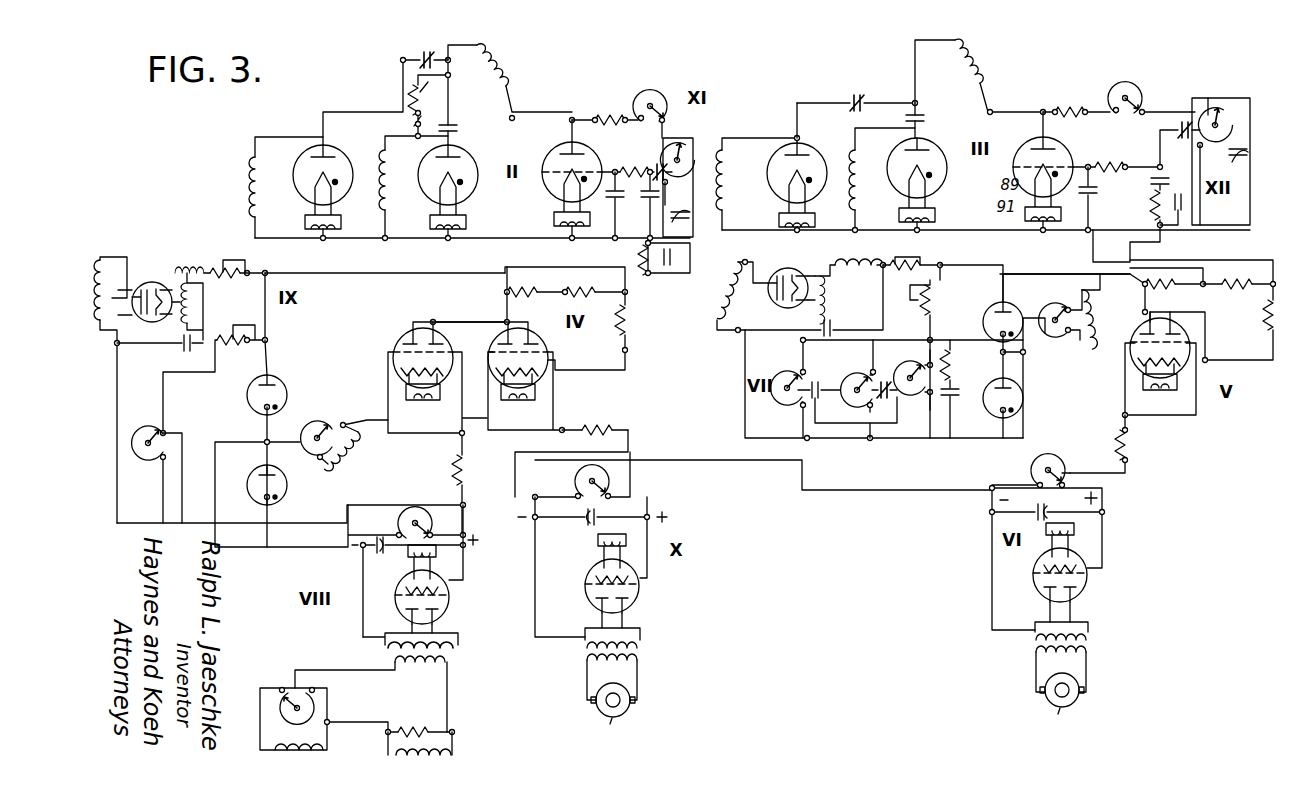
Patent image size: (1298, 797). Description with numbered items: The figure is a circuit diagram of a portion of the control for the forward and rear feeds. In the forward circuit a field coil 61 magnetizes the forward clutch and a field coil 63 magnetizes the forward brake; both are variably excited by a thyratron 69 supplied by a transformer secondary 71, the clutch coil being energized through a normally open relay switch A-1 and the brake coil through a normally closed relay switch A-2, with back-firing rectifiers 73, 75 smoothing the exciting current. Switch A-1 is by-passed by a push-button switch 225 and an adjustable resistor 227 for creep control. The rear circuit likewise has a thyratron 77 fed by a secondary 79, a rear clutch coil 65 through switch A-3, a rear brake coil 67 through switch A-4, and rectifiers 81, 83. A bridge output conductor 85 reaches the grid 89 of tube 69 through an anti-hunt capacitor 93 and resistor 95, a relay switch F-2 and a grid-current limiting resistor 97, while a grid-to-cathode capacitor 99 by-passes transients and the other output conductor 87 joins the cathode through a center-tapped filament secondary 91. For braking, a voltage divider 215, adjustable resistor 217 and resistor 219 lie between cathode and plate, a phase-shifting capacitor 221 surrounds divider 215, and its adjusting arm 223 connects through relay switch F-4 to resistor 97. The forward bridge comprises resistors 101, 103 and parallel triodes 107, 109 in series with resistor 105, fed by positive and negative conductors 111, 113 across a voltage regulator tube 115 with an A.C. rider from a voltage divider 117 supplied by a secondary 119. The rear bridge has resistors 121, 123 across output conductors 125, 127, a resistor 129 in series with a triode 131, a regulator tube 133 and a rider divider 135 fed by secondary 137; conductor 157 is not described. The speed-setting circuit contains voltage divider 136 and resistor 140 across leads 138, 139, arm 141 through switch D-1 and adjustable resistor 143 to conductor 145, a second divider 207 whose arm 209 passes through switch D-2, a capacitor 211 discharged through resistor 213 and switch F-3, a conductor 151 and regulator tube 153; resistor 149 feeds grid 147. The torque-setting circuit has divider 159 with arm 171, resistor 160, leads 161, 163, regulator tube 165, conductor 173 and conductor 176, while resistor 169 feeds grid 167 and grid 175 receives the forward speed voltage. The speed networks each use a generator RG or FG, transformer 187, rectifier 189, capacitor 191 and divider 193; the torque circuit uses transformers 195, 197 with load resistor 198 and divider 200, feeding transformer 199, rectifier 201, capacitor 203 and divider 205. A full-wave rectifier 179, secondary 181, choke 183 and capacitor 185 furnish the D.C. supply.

The field coil 63 is at (248, 172).
The back-firing rectifier 75 is at (300, 201).
The field coil 61 is at (390, 190).
The back-firing rectifier 73 is at (470, 196).
The normally open relay switch A-1 is at (452, 123).
The normally closed relay switch A-2 is at (420, 56).
The adjustable resistor 227 is at (410, 86).
The push-button switch 225 is at (412, 124).
The transformer secondary 71 is at (510, 84).
The thyratron 69 is at (541, 154).
The grid 89 is at (556, 176).
The center-tapped filament transformer secondary 91 is at (557, 226).
The resistor 219 is at (612, 116).
The adjustable resistor 217 is at (650, 98).
The grid-current limiting resistor 97 is at (616, 165).
The normally closed relay switch F-4 is at (657, 165).
The grid-to-cathode capacitor 99 is at (610, 200).
The normally open relay switch F-2 is at (645, 200).
The adjusting arm 223 is at (683, 150).
The voltage divider 215 is at (679, 193).
The phase-shifting capacitor 221 is at (676, 223).
The capacitor 93 is at (676, 257).
The resistor 95 is at (655, 258).
The field coil 67 is at (728, 195).
The back-firing rectifier 83 is at (771, 161).
The normally closed relay switch A-4 is at (858, 96).
The normally open relay switch A-3 is at (924, 114).
The field coil 65 is at (860, 190).
The back-firing rectifier 81 is at (950, 181).
The transformer secondary 79 is at (982, 72).
The thyratron tube 77 is at (1021, 144).
The transformer secondary 181 is at (102, 256).
The full-wave rectifier 179 is at (160, 282).
The series choke 183 is at (186, 266).
The parallel capacitor 185 is at (183, 349).
The positive lead 161 is at (262, 272).
The positive conductor 111 is at (362, 273).
The resistor 160 is at (237, 330).
The voltage regulator tube 115 is at (284, 381).
The adjusting arm 171 is at (177, 474).
The voltage divider 159 is at (143, 427).
The negative lead 163 is at (152, 520).
The voltage regulator tube 165 is at (289, 504).
The conductor 176 is at (682, 448).
The conductor 173 is at (300, 445).
The voltage divider 117 is at (316, 420).
The transformer secondary 119 is at (348, 454).
The negative conductor 113 is at (370, 416).
The grid-current limiting resistor 169 is at (457, 464).
The bridge output conductor 85 is at (524, 266).
The resistor 103 is at (565, 282).
The bridge output conductor 87 is at (628, 280).
The resistor 101 is at (486, 308).
The resistor 105 is at (630, 326).
The triode 107 is at (407, 337).
The grid 167 is at (400, 345).
The triode 109 is at (556, 348).
The grid 175 is at (556, 356).
The positive lead 138 is at (945, 266).
The resistor 140 is at (926, 298).
The capacitor 211 is at (946, 345).
The second voltage divider 207 is at (790, 372).
The adjusting arm 209 is at (788, 398).
The normally open relay switch D-2 is at (847, 410).
The movable adjusting arm 141 is at (852, 376).
The voltage divider 136 is at (856, 372).
The normally closed relay switch D-1 is at (886, 402).
The adjustable resistor 143 is at (913, 375).
The conductor 145 is at (920, 389).
The resistor 213 is at (960, 360).
The normally closed relay switch F-3 is at (952, 413).
The voltage regulator tube 133 is at (993, 305).
The conductor 151 is at (1014, 378).
The voltage regulator tube 153 is at (988, 392).
The negative lead 139 is at (790, 436).
The voltage divider 135 is at (1060, 305).
The transformer secondary 137 is at (1083, 350).
The conductor 157 is at (1072, 282).
The bridge output conductor 127 is at (1212, 262).
The bridge output conductor 125 is at (1130, 260).
The resistor 121 is at (1174, 297).
The resistor 123 is at (1239, 291).
The resistor 129 is at (1272, 320).
The triode tube 131 is at (1172, 330).
The grid 147 is at (1138, 346).
The grid-current limiting resistor 149 is at (1135, 448).
The voltage divider 193 is at (578, 485).
The shunt filtering capacitor 191 is at (582, 527).
The rectifier 189 is at (648, 595).
The transformer 187 is at (645, 650).
The generator RG is at (1062, 700).
The generator FG is at (613, 713).
The voltage divider 205 is at (404, 514).
The shunt capacitor 203 is at (378, 555).
The rectifier 201 is at (454, 603).
The transformer 199 is at (455, 660).
The voltage divider 200 is at (324, 719).
The voltage transformer secondary 197 is at (295, 755).
The load resistor 198 is at (413, 725).
The current transformer secondary 195 is at (420, 762).